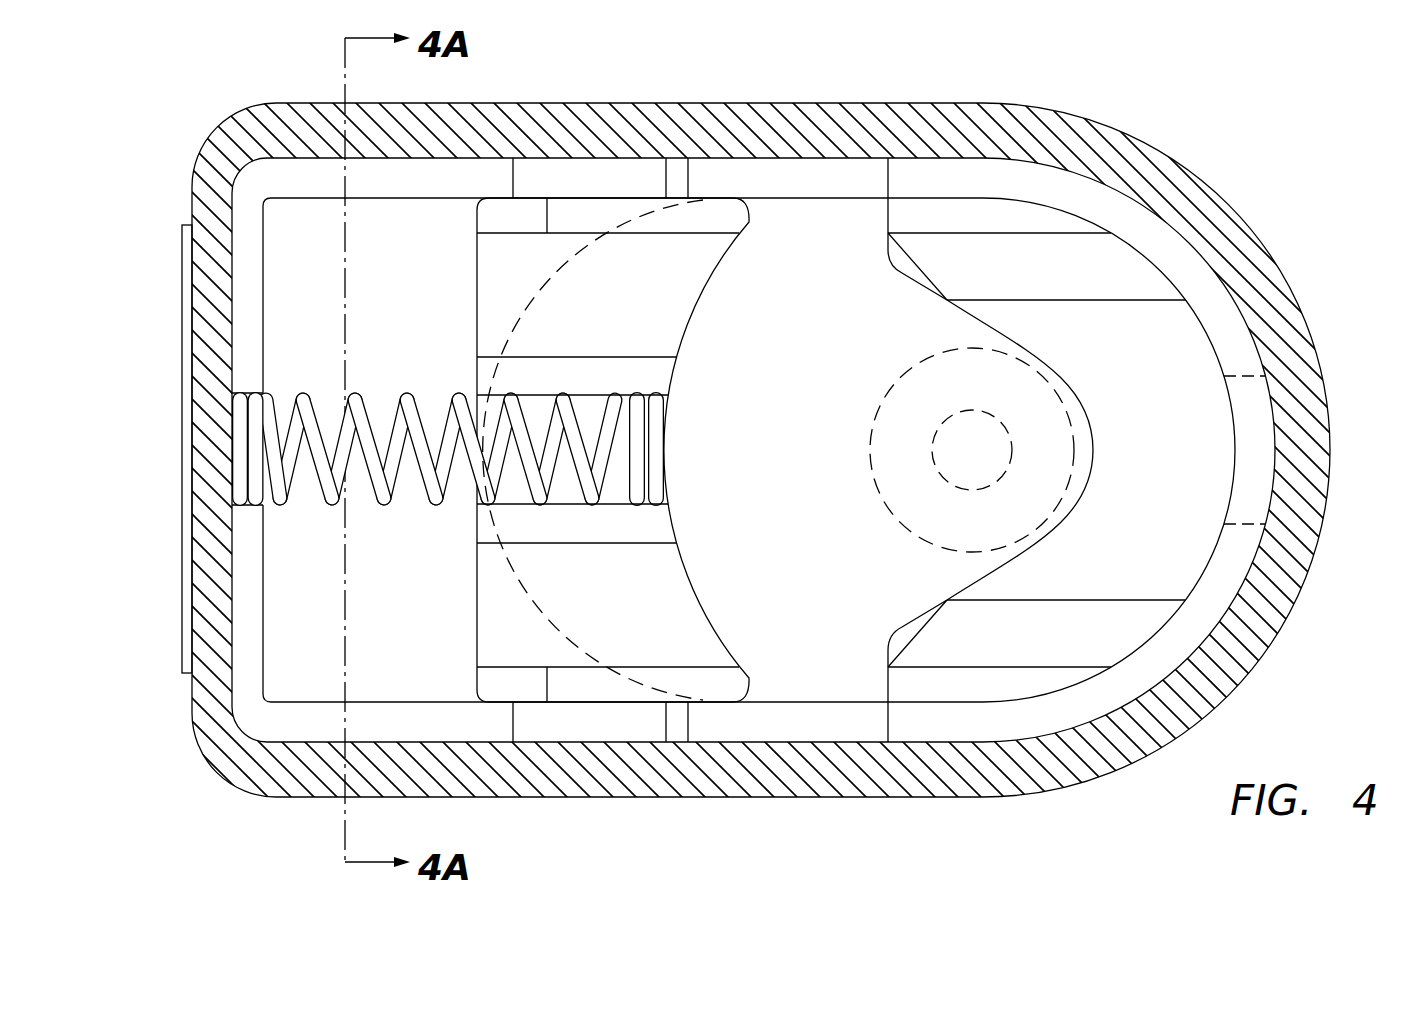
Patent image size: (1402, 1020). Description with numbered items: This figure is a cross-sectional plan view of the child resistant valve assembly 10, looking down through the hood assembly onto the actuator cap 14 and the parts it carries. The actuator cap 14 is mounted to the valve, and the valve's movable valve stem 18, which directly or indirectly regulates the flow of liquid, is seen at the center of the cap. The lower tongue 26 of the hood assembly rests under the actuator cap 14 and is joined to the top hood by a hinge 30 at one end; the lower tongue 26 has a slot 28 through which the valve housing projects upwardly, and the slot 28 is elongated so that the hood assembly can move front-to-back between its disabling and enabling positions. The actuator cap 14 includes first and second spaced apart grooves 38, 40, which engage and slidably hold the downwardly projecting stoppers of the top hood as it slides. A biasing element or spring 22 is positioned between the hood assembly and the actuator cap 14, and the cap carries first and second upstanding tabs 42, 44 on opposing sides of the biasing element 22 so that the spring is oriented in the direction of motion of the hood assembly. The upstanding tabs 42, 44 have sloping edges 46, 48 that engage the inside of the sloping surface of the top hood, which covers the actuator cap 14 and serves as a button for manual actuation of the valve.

The child resistant valve assembly 10 is at (160, 124).
The actuator cap 14 is at (770, 690).
The movable valve stem 18 is at (955, 456).
The biasing element or spring 22 is at (380, 505).
The lower tongue 26 is at (560, 102).
The slot 28 is at (500, 293).
The hinge 30 is at (172, 651).
The first groove 38 is at (925, 268).
The second groove 40 is at (925, 632).
The first upstanding tab 42 is at (568, 357).
The second upstanding tab 44 is at (648, 545).
The sloping edge 46 is at (620, 372).
The sloping edge 48 is at (573, 538).